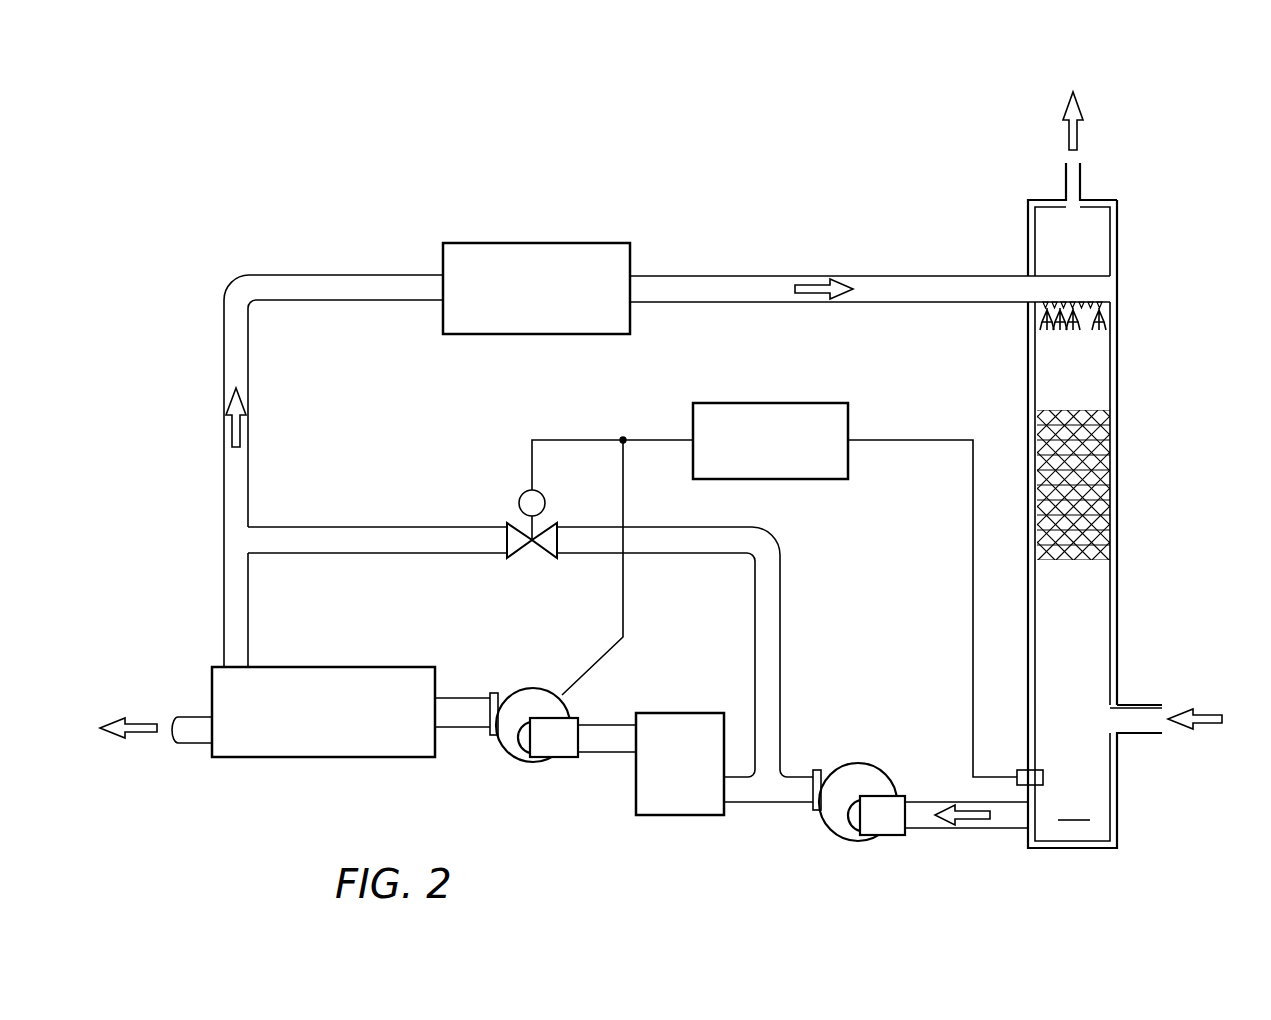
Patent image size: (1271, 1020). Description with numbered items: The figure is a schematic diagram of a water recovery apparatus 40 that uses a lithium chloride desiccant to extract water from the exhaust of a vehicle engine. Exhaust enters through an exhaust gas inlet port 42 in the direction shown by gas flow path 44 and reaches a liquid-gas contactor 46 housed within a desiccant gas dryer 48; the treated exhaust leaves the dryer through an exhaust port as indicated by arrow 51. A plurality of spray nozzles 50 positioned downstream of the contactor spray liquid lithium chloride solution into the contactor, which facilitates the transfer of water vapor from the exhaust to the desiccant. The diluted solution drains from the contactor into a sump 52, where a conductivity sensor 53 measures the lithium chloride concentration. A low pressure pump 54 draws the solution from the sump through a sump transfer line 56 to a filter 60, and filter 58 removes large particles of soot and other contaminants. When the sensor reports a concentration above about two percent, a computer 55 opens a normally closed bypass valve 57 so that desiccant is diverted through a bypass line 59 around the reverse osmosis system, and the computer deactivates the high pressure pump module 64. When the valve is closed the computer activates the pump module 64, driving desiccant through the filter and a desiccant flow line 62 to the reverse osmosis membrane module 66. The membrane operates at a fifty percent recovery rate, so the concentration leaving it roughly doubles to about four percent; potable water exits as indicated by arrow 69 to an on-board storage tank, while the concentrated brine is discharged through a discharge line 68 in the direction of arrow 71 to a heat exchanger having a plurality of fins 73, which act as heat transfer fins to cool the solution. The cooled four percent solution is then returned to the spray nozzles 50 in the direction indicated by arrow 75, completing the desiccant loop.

The water recovery apparatus 40 is at (268, 212).
The exhaust gas inlet port 42 is at (1151, 703).
The gas flow path 44 is at (1208, 713).
The liquid-gas contactor 46 is at (1103, 490).
The desiccant gas dryer 48 is at (1117, 390).
The spray nozzles 50 is at (1085, 312).
The arrow 51 is at (1078, 133).
The sump 52 is at (1074, 807).
The conductivity sensor 53 is at (1045, 780).
The low pressure pump 54 is at (870, 775).
The computer 55 is at (743, 410).
The sump transfer line 56 is at (933, 800).
The bypass valve 57 is at (520, 501).
The filter 58 is at (978, 826).
The bypass line 59 is at (783, 590).
The filter 60 is at (678, 717).
The desiccant flow line 62 is at (600, 755).
The pump module 64 is at (532, 697).
The membrane module 66 is at (314, 670).
The discharge line 68 is at (222, 497).
The arrow 69 is at (141, 726).
The arrow 71 is at (240, 430).
The fins 73 is at (468, 253).
The arrow 75 is at (813, 285).